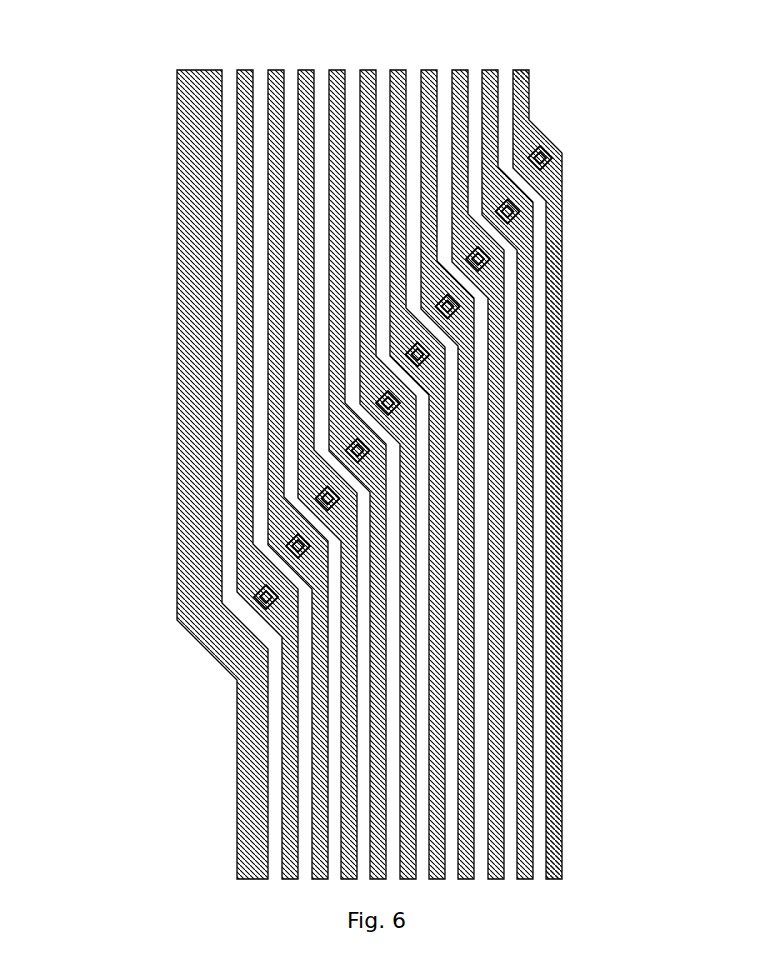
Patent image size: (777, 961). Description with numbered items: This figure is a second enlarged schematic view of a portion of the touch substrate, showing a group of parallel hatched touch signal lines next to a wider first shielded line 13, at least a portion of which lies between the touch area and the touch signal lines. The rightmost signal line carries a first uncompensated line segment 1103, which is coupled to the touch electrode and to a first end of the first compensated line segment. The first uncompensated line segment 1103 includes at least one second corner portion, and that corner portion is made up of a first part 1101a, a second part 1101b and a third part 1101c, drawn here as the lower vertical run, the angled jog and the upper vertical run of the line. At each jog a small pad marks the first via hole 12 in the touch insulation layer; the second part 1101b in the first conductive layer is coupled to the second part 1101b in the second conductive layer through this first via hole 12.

The first via hole 12 is at (270, 603).
The first shielded line 13 is at (187, 345).
The first part 1101a is at (560, 220).
The second part 1101b is at (556, 150).
The third part 1101c is at (520, 100).
The first uncompensated line segment 1103 is at (527, 70).